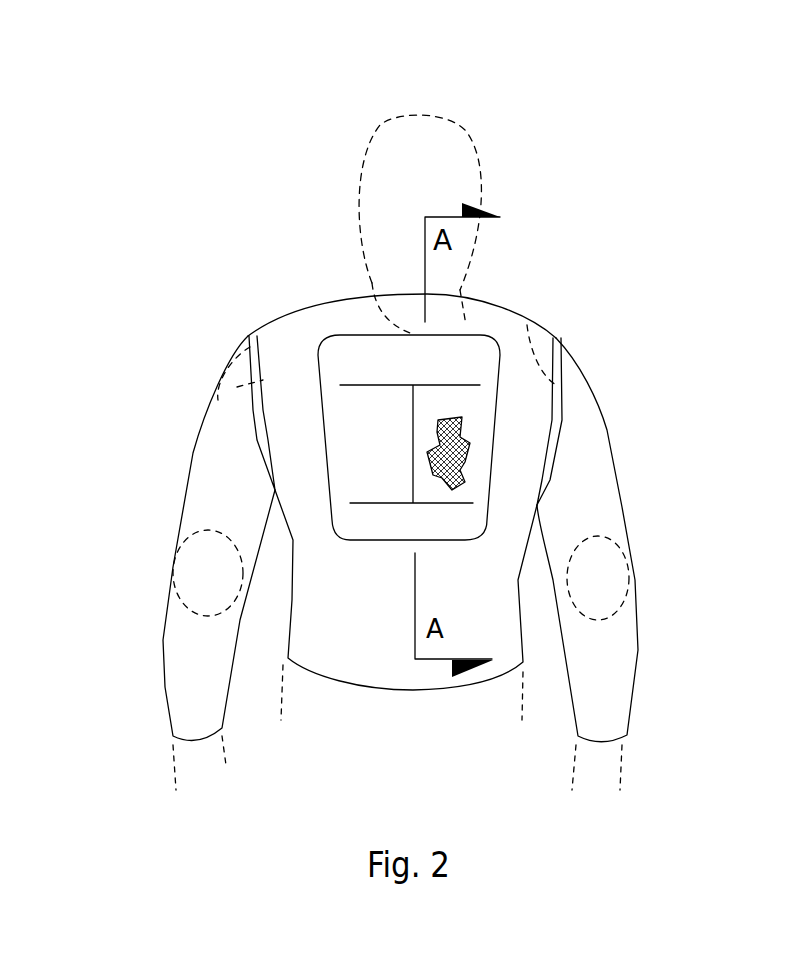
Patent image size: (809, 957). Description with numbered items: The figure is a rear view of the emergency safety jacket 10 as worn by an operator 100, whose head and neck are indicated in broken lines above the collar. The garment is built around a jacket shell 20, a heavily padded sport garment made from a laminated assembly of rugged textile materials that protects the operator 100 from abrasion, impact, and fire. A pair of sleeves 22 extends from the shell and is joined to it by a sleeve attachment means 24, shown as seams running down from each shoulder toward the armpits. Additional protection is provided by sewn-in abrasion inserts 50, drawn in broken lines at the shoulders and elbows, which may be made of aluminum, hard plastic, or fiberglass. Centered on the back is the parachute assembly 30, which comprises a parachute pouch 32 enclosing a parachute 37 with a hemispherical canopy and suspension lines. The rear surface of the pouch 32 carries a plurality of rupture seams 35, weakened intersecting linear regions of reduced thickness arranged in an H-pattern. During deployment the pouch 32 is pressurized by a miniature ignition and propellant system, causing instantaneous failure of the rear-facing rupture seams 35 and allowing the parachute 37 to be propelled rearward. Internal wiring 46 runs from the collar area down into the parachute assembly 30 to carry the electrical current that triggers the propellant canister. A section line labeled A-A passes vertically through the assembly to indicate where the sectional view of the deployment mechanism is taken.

The emergency safety jacket 10 is at (712, 180).
The jacket shell 20 is at (358, 648).
The sleeves 22 is at (193, 453).
The sleeve attachment means 24 is at (250, 387).
The parachute assembly 30 is at (535, 452).
The parachute pouch 32 is at (335, 530).
The rupture seams 35 is at (388, 503).
The parachute 37 is at (447, 460).
The internal wiring 46 is at (372, 335).
The abrasion inserts 50 is at (248, 338).
The operator 100 is at (370, 140).